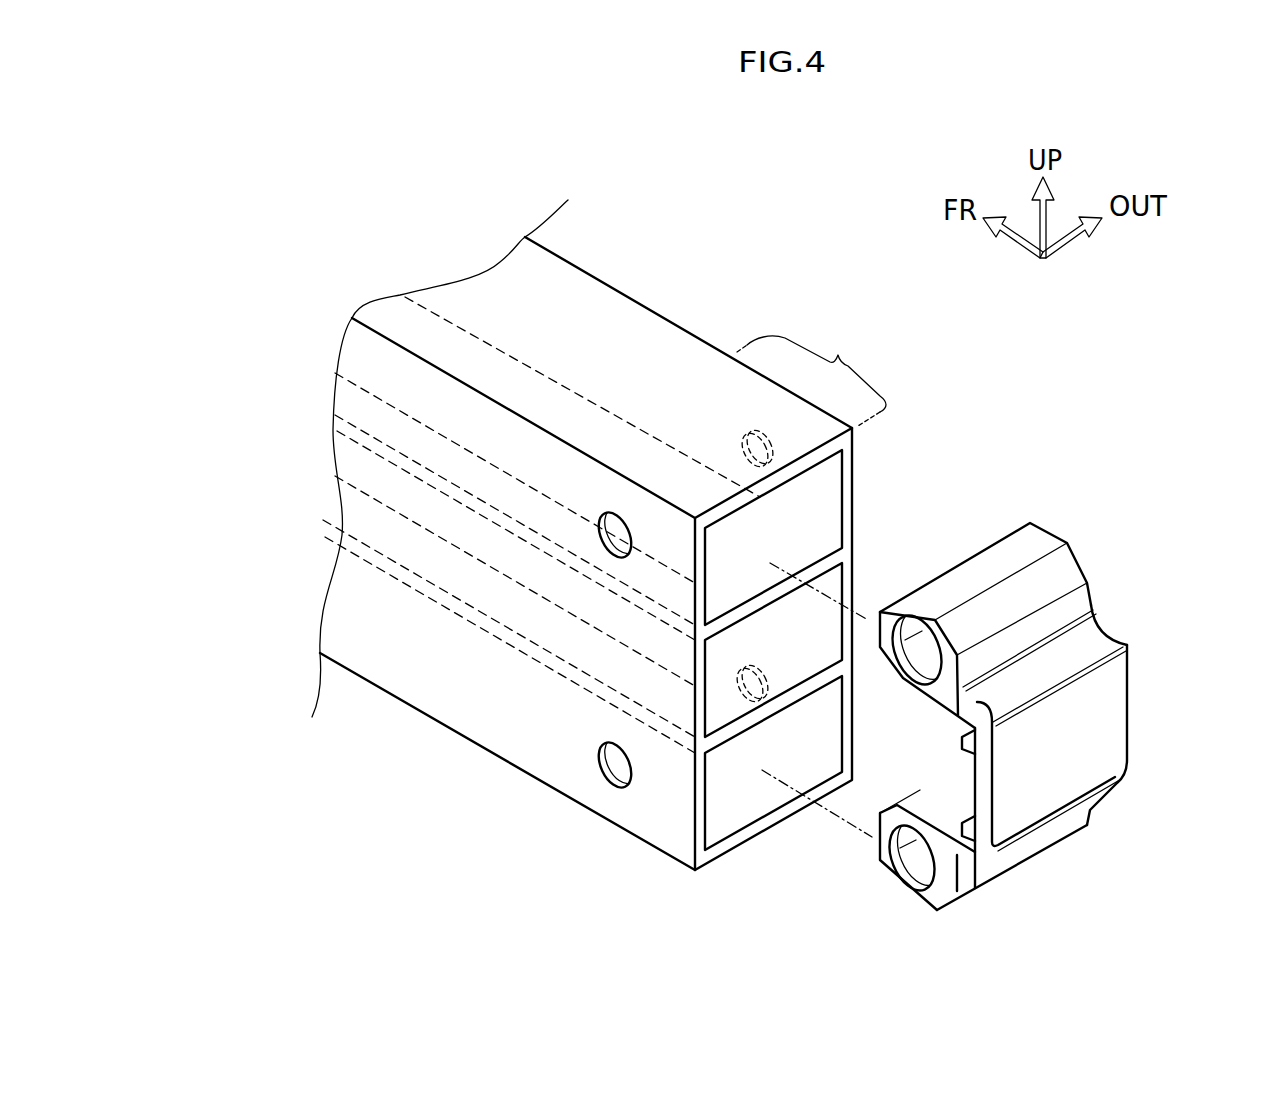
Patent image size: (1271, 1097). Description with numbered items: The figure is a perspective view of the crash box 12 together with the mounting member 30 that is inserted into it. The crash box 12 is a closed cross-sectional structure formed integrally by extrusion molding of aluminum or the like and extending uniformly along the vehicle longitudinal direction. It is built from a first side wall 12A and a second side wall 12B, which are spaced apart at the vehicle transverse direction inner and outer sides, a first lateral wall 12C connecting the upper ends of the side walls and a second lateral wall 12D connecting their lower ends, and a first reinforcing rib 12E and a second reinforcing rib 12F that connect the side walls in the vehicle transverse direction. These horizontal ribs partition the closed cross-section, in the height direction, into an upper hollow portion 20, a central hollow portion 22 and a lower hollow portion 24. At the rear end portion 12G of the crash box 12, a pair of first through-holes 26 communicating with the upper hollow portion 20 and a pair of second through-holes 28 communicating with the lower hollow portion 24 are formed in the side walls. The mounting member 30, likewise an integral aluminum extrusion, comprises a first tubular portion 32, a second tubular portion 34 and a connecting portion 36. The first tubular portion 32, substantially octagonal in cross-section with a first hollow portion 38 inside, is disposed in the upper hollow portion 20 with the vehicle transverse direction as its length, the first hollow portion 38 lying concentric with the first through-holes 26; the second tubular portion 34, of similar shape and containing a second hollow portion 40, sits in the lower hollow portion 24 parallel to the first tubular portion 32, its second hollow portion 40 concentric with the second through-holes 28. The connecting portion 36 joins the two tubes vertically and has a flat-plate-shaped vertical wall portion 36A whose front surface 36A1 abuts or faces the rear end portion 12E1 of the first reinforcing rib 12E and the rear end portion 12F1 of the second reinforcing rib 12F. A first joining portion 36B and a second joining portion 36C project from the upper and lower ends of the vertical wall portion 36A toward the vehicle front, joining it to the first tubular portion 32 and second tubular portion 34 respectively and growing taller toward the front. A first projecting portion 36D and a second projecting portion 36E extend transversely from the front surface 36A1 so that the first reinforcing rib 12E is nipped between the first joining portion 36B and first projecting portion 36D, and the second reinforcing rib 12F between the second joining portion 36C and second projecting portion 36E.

The crash box 12 is at (713, 262).
The first side wall 12A is at (463, 703).
The second side wall 12B is at (852, 497).
The first lateral wall 12C is at (568, 312).
The second lateral wall 12D is at (745, 848).
The first reinforcing rib 12E is at (388, 443).
The rear end portion of first reinforcing rib 12E1 is at (820, 530).
The second reinforcing rib 12F is at (563, 673).
The rear end portion of second reinforcing rib 12F1 is at (715, 727).
The rear end portion 12G is at (705, 332).
The upper hollow portion 20 is at (788, 545).
The central hollow portion 22 is at (795, 672).
The lower hollow portion 24 is at (738, 762).
The first through-holes 26 is at (607, 560).
The second through-holes 28 is at (610, 767).
The mounting member 30 is at (1120, 515).
The first tubular portion 32 is at (1085, 556).
The second tubular portion 34 is at (915, 883).
The connecting portion 36 is at (1059, 772).
The vertical wall portion 36A is at (1090, 752).
The front surface 36A1 is at (938, 806).
The first joining portion 36B is at (1088, 636).
The second joining portion 36C is at (963, 858).
The first projecting portion 36D is at (1108, 782).
The second projecting portion 36E is at (958, 797).
The first hollow portion 38 is at (912, 672).
The second hollow portion 40 is at (905, 865).